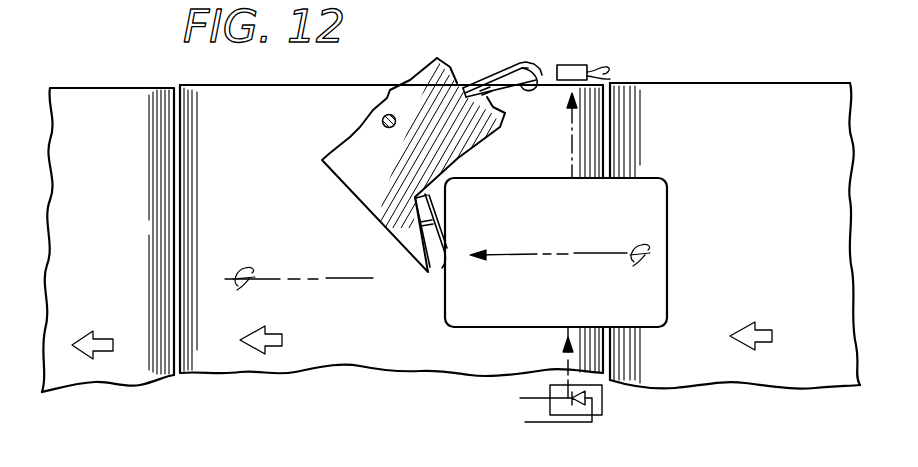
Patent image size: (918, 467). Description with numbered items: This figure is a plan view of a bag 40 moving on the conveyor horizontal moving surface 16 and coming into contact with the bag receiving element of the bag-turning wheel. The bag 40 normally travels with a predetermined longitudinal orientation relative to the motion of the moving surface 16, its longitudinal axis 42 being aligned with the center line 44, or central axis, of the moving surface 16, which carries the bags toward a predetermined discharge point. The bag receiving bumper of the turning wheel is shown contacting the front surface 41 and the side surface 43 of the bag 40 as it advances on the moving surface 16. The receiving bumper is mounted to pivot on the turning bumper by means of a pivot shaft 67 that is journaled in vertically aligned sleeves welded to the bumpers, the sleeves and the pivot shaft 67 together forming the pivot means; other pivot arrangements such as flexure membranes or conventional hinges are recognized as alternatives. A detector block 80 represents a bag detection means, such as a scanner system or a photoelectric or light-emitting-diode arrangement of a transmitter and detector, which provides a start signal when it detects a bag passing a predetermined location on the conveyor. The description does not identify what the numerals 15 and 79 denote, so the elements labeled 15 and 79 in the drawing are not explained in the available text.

The wedge block 15 is at (345, 186).
The conveyor horizontal moving surface 16 is at (212, 220).
The bag 40 is at (575, 217).
The front surface 41 is at (447, 201).
The longitudinal axis 42 is at (575, 256).
The side surface 43 is at (506, 178).
The center line 44 is at (332, 281).
The pivot shaft 67 is at (552, 3).
The diode sensor 79 is at (603, 401).
The detector block 80 is at (578, 65).